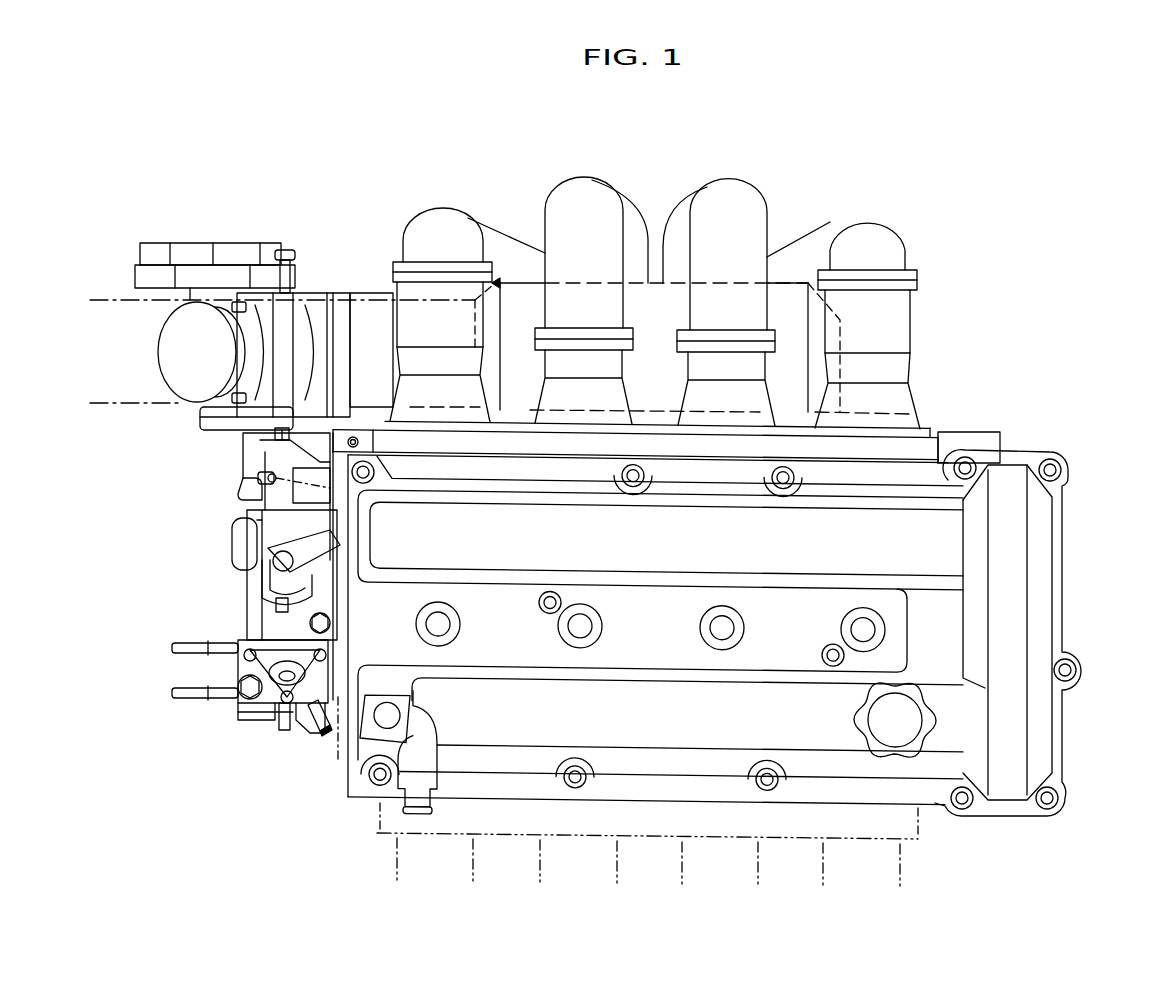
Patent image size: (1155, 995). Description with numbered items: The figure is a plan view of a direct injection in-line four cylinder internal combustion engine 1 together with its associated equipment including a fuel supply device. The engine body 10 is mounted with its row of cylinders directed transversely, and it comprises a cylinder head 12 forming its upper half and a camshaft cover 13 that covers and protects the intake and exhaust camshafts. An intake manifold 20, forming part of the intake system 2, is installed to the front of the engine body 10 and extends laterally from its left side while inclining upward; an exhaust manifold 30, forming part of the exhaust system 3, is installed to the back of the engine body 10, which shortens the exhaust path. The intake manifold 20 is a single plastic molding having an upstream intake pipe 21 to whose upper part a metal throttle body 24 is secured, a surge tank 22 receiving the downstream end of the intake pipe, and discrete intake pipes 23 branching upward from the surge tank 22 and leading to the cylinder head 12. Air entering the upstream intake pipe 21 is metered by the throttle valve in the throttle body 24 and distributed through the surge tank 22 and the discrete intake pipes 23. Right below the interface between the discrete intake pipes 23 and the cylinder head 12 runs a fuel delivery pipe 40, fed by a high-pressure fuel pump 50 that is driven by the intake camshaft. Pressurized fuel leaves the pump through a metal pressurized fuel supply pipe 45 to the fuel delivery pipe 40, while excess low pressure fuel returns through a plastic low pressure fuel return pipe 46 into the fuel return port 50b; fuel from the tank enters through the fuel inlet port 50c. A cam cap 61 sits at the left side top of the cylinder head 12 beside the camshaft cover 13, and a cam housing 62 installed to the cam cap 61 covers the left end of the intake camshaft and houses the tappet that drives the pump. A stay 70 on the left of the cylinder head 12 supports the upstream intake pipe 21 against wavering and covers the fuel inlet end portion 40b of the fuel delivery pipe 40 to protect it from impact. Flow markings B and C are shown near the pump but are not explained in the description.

The internal combustion engine 1 is at (975, 235).
The intake system 2 is at (385, 228).
The exhaust system 3 is at (388, 845).
The engine body 10 is at (1068, 620).
The cylinder head 12 is at (975, 442).
The camshaft cover 13 is at (1045, 568).
The intake manifold 20 is at (915, 318).
The upstream intake pipe 21 is at (378, 312).
The surge tank 22 is at (525, 290).
The discrete intake pipes 23 is at (437, 215).
The throttle body 24 is at (200, 240).
The exhaust manifold 30 is at (900, 862).
The fuel delivery pipe 40 is at (648, 410).
The fuel inlet end portion 40b is at (285, 438).
The pressurized fuel supply pipe 45 is at (285, 727).
The low pressure fuel return pipe 46 is at (243, 488).
The high-pressure fuel pump 50 is at (228, 625).
The fuel return port 50b is at (303, 733).
The fuel inlet port 50c is at (172, 693).
The cam cap 61 is at (340, 532).
The cam housing 62 is at (245, 530).
The stay 70 is at (250, 455).
The blow-by gas flow B is at (275, 715).
The fresh air flow C is at (330, 745).